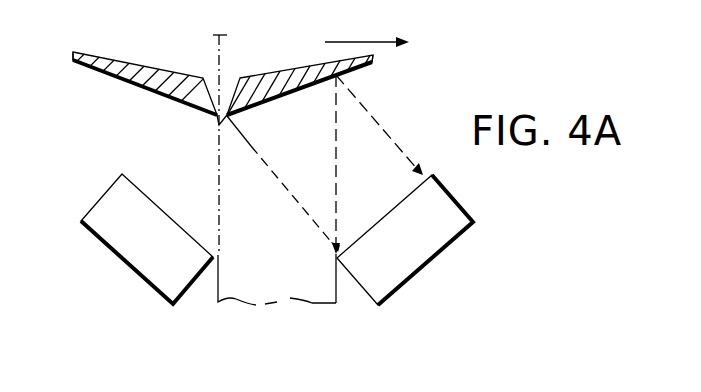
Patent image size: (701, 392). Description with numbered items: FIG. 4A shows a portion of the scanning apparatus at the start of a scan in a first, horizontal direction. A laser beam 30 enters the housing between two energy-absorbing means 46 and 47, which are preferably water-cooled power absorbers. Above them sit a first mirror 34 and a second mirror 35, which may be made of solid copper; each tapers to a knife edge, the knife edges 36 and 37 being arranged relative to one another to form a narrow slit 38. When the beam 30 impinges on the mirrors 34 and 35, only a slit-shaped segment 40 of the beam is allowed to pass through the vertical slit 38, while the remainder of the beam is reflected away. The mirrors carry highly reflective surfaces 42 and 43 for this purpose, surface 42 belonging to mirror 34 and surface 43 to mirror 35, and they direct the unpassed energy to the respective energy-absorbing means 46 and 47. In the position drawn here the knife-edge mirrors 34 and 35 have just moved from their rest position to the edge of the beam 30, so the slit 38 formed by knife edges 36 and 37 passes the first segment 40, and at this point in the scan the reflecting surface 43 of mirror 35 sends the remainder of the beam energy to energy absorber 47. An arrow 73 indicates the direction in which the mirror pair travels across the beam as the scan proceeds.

The laser beam 30 is at (312, 304).
The first mirror 34 is at (138, 53).
The second mirror 35 is at (262, 72).
The knife edge 36 is at (216, 114).
The knife edge 37 is at (230, 116).
The narrow slit 38 is at (227, 118).
The slit-shaped segment 40 is at (213, 35).
The reflective surface 42 is at (84, 65).
The reflective surface 43 is at (368, 66).
The energy-absorbing means 46 is at (117, 257).
The energy-absorbing means 47 is at (405, 279).
The direction of travel 73 is at (337, 42).